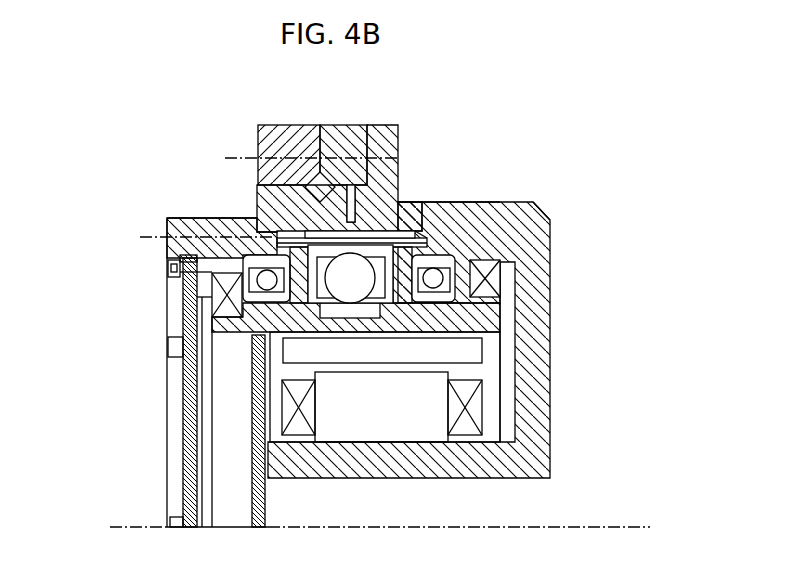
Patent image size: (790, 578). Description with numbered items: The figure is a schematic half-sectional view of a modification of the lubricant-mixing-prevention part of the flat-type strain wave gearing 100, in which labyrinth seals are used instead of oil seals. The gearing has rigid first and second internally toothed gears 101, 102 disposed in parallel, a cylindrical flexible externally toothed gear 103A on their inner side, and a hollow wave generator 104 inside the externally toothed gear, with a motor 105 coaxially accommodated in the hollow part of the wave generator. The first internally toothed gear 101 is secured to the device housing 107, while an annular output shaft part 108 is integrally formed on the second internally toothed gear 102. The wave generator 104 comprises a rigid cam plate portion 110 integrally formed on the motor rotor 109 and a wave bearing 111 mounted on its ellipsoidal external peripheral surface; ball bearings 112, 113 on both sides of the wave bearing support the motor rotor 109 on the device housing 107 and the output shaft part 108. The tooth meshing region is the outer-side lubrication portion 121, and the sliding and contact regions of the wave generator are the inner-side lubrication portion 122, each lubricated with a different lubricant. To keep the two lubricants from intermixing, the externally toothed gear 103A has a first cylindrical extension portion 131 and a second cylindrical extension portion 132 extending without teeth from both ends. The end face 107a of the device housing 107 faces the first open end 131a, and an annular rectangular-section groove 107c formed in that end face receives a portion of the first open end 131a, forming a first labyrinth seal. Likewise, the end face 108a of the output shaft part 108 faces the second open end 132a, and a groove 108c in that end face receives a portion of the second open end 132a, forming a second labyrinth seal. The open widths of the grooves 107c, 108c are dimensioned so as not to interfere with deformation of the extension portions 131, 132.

The strain wave gearing 100 is at (195, 166).
The first internally toothed gear 101 is at (372, 217).
The second internally toothed gear 102 is at (310, 222).
The externally toothed gear 103A is at (397, 228).
The wave generator 104 is at (632, 338).
The motor 105 is at (268, 393).
The device housing 107 is at (410, 197).
The end face 107a is at (477, 275).
The groove 107c is at (505, 228).
The output shaft part 108 is at (183, 214).
The end face 108a is at (237, 270).
The groove 108c is at (140, 238).
The motor rotor 109 is at (175, 355).
The rigid cam plate portion 110 is at (368, 332).
The wave bearing 111 is at (392, 292).
The ball bearing 112 is at (505, 262).
The ball bearing 113 is at (243, 267).
The outer-side lubrication portion 121 is at (347, 222).
The inner-side lubrication portion 122 is at (212, 310).
The first cylindrical extension portion 131 is at (427, 240).
The first open end 131a is at (508, 203).
The second cylindrical extension portion 132 is at (300, 232).
The second open end 132a is at (185, 220).